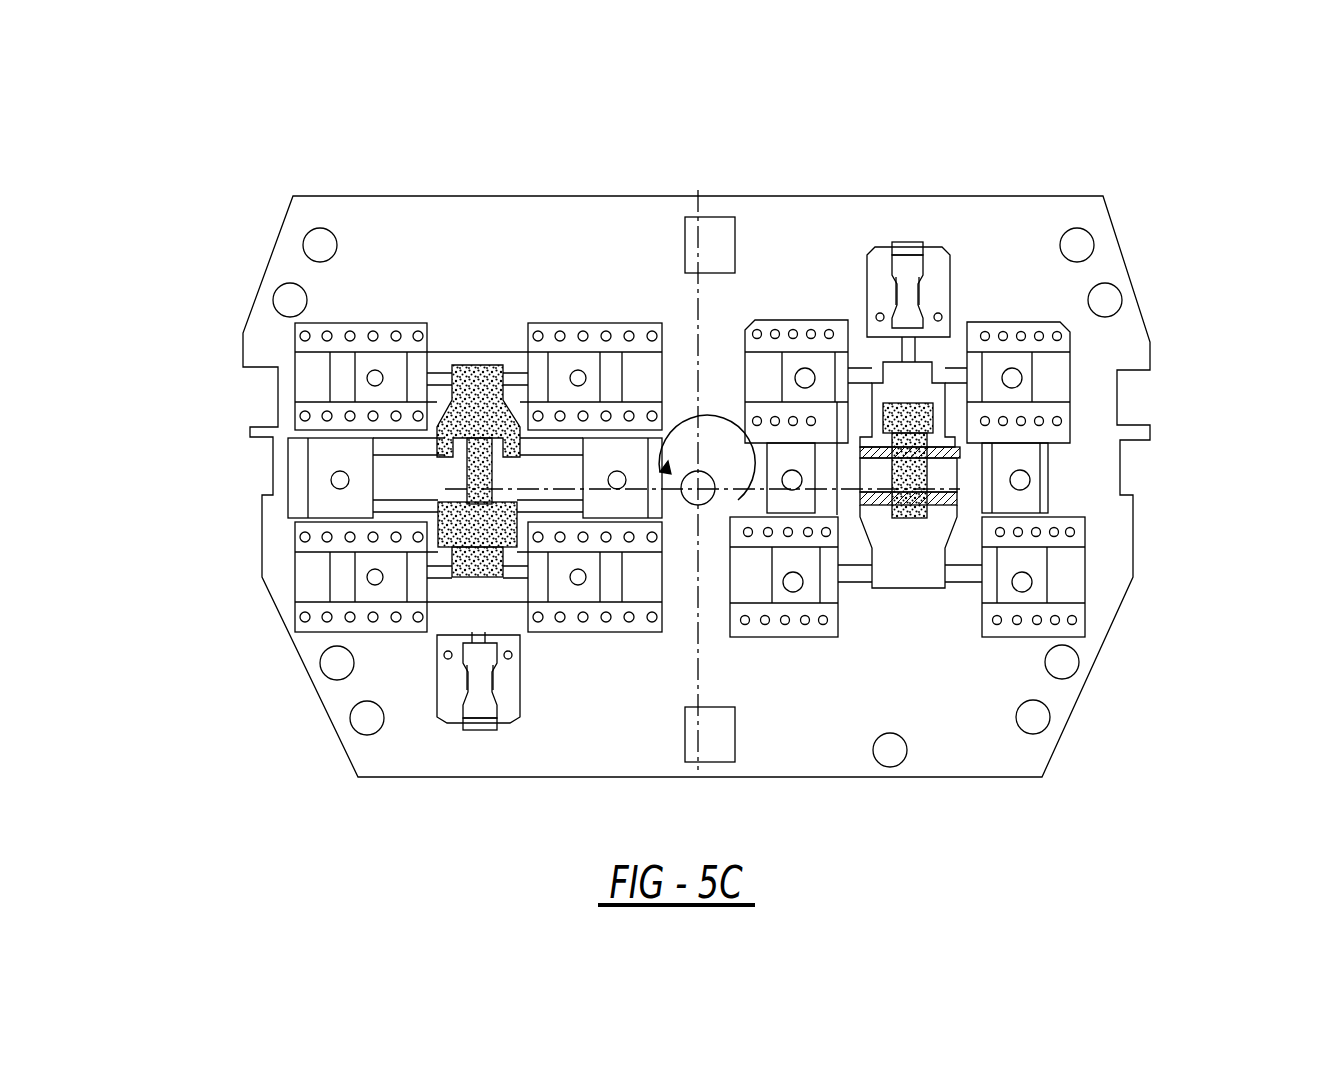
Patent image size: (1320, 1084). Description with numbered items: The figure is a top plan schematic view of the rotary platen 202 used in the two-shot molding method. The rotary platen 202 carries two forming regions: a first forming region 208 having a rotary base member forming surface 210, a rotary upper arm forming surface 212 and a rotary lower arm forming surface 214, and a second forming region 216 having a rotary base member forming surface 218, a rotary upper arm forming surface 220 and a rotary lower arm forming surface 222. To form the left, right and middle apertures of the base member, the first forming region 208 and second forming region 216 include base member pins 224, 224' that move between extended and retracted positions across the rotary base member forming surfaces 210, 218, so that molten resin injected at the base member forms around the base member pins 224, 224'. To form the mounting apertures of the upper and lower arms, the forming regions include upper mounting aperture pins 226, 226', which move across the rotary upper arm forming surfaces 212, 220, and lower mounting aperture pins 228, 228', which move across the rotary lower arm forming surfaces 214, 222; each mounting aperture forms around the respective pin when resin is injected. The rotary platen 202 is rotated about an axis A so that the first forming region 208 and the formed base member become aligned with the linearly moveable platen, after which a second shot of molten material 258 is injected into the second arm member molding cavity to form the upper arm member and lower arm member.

The rotary platen 202 is at (1148, 172).
The first forming region 208 is at (960, 305).
The rotary base member forming surface 210 is at (907, 517).
The rotary upper arm forming surface 212 is at (907, 380).
The rotary lower arm forming surface 214 is at (918, 577).
The second forming region 216 is at (462, 316).
The rotary base member forming surface 218 is at (460, 473).
The rotary upper arm forming surface 220 is at (490, 370).
The rotary lower arm forming surface 222 is at (464, 573).
The base member pin 224 is at (1048, 476).
The base member pin 224' is at (839, 306).
The upper mounting aperture pin 226 is at (582, 330).
The upper mounting aperture pin 226' is at (330, 330).
The lower mounting aperture pin 228 is at (582, 673).
The lower mounting aperture pin 228' is at (301, 605).
The second shot of molten material 258 is at (445, 412).
The axis A is at (698, 492).